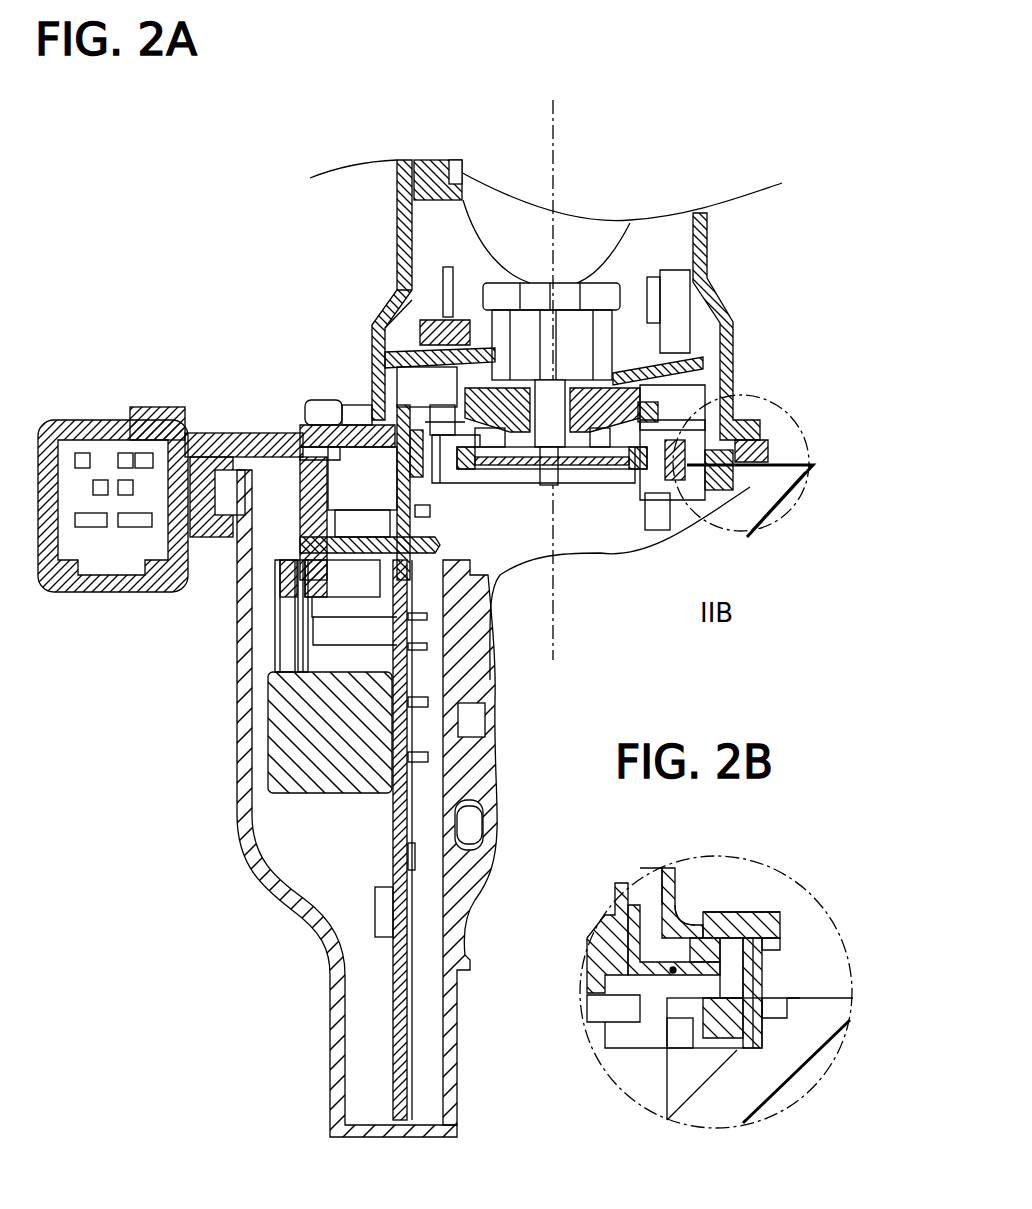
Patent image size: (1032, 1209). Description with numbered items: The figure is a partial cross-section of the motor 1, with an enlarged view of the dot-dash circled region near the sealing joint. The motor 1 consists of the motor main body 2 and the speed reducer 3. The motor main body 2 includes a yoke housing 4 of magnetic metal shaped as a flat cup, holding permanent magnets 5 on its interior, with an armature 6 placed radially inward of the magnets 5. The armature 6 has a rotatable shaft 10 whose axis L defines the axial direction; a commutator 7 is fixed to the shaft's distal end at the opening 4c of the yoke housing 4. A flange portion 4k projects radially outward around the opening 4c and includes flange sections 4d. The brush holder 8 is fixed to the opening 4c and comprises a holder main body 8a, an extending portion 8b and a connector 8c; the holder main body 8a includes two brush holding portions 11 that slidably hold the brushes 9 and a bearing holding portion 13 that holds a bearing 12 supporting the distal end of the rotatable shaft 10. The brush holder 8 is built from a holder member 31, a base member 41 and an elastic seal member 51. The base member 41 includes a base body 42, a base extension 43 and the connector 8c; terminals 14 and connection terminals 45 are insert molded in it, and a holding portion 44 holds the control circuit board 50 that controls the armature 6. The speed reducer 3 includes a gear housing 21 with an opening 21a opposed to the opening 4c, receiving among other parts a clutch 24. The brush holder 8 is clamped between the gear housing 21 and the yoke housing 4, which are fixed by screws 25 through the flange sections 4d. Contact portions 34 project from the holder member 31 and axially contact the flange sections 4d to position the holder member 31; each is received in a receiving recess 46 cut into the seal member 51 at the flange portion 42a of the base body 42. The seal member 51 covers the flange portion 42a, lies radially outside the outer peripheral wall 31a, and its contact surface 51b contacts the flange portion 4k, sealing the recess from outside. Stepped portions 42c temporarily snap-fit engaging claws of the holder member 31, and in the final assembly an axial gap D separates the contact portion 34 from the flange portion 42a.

In FIG. 2A, the motor 1 is at (254, 236).
In FIG. 2A, the motor main body 2 is at (397, 180).
In FIG. 2A, the speed reducer 3 is at (240, 776).
In FIG. 2A, the yoke housing 4 is at (705, 262).
In FIG. 2B, the yoke housing 4 is at (690, 860).
In FIG. 2A, the opening 4c is at (362, 478).
In FIG. 2B, the opening 4c is at (677, 867).
In FIG. 2A, the flange sections 4d is at (320, 402).
In FIG. 2B, the flange sections 4d is at (775, 935).
In FIG. 2B, the flange portion 4k is at (767, 920).
In FIG. 2A, the permanent magnets 5 is at (433, 168).
In FIG. 2A, the armature 6 is at (516, 208).
In FIG. 2A, the commutator 7 is at (541, 320).
In FIG. 2A, the brush holder 8 is at (780, 412).
In FIG. 2A, the holder main body 8a is at (375, 336).
In FIG. 2A, the extending portion 8b is at (222, 432).
In FIG. 2A, the connector 8c is at (72, 418).
In FIG. 2A, the brushes 9 is at (457, 300).
In FIG. 2A, the rotatable shaft 10 is at (548, 485).
In FIG. 2A, the brush holding portions 11 is at (385, 312).
In FIG. 2A, the bearing 12 is at (582, 445).
In FIG. 2A, the bearing holding portion 13 is at (512, 440).
In FIG. 2A, the terminals 14 is at (125, 455).
In FIG. 2A, the gear housing 21 is at (756, 532).
In FIG. 2B, the gear housing 21 is at (800, 1090).
In FIG. 2B, the opening 21a is at (783, 1023).
In FIG. 2A, the clutch 24 is at (585, 565).
In FIG. 2A, the screws 25 is at (285, 425).
In FIG. 2A, the holder member 31 is at (712, 357).
In FIG. 2B, the outer peripheral wall 31a is at (648, 885).
In FIG. 2A, the contact portions 34 is at (346, 418).
In FIG. 2B, the contact portions 34 is at (705, 945).
In FIG. 2A, the base member 41 is at (712, 383).
In FIG. 2A, the base body 42 is at (686, 460).
In FIG. 2B, the base body 42 is at (618, 898).
In FIG. 2B, the flange portion 42a is at (727, 1040).
In FIG. 2A, the stepped portions 42c is at (690, 505).
In FIG. 2A, the base extension 43 is at (240, 440).
In FIG. 2A, the holding portion 44 is at (278, 578).
In FIG. 2A, the connection terminals 45 is at (90, 524).
In FIG. 2A, the receiving recesses 46 is at (768, 465).
In FIG. 2B, the receiving recesses 46 is at (690, 985).
In FIG. 2A, the control circuit board 50 is at (400, 818).
In FIG. 2A, the seal member 51 is at (265, 412).
In FIG. 2B, the seal member 51 is at (755, 973).
In FIG. 2B, the contact surface 51b is at (760, 930).
In FIG. 2A, the axis L is at (556, 131).
In FIG. 2B, the axial gap D is at (670, 975).